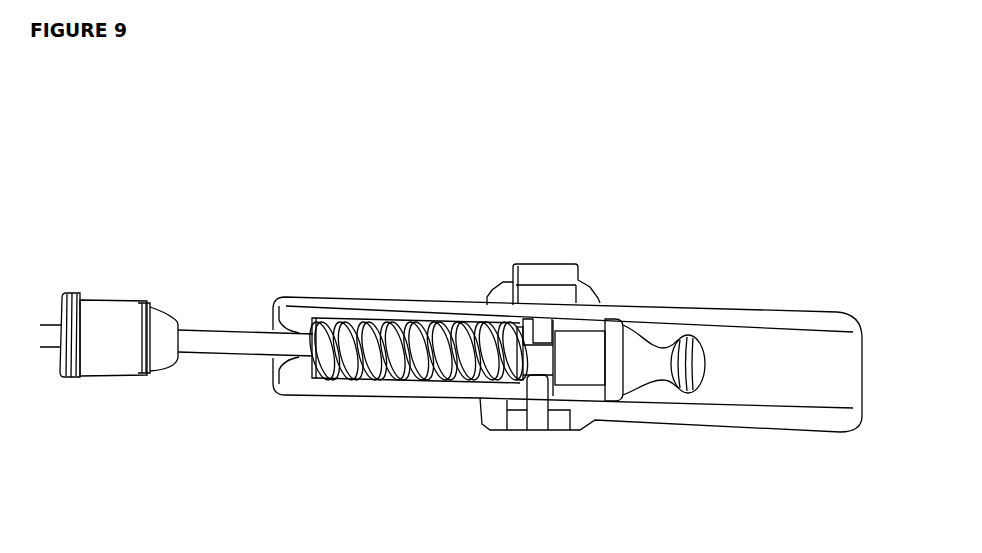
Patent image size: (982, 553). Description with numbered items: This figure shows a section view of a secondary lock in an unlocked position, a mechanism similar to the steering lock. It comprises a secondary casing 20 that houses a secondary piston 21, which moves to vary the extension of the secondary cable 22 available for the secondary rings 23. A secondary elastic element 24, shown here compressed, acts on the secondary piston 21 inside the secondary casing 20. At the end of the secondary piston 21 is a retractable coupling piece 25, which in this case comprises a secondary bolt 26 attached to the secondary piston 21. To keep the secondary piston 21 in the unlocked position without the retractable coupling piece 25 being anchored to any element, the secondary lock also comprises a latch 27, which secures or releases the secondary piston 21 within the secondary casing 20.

The secondary casing 20 is at (454, 317).
The secondary piston 21 is at (585, 345).
The secondary cable 22 is at (238, 338).
The secondary rings 23 is at (108, 317).
The secondary elastic element 24 is at (383, 330).
The retractable coupling piece 25 is at (638, 345).
The secondary bolt 26 is at (693, 372).
The latch 27 is at (538, 410).